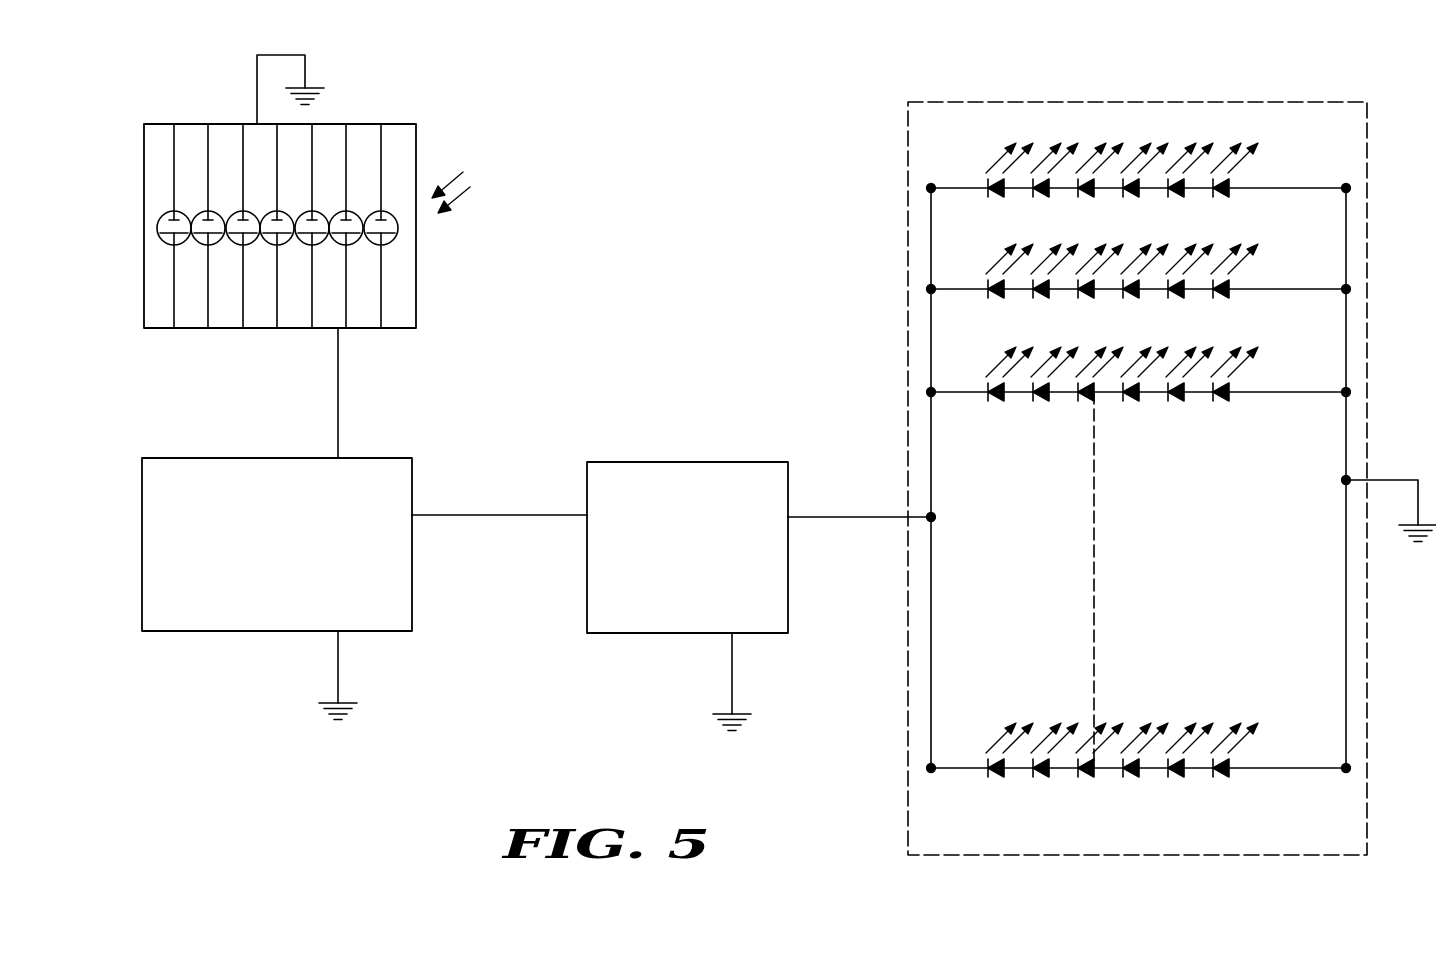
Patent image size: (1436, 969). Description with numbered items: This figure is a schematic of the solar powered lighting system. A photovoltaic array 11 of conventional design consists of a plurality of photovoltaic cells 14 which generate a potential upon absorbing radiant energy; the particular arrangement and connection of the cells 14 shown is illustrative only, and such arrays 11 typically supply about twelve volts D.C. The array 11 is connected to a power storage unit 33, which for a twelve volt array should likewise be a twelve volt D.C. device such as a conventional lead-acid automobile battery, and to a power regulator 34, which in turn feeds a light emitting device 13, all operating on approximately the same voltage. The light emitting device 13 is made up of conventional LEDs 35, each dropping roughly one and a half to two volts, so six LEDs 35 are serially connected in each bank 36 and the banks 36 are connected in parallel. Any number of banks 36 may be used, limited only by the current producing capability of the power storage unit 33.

The photovoltaic array 11 is at (417, 310).
The photovoltaic cells 14 is at (399, 229).
The light emitting device 13 is at (1148, 465).
The power storage unit 33 is at (375, 632).
The power regulator 34 is at (638, 634).
The LED 35 is at (1122, 460).
The bank 36 is at (927, 188).